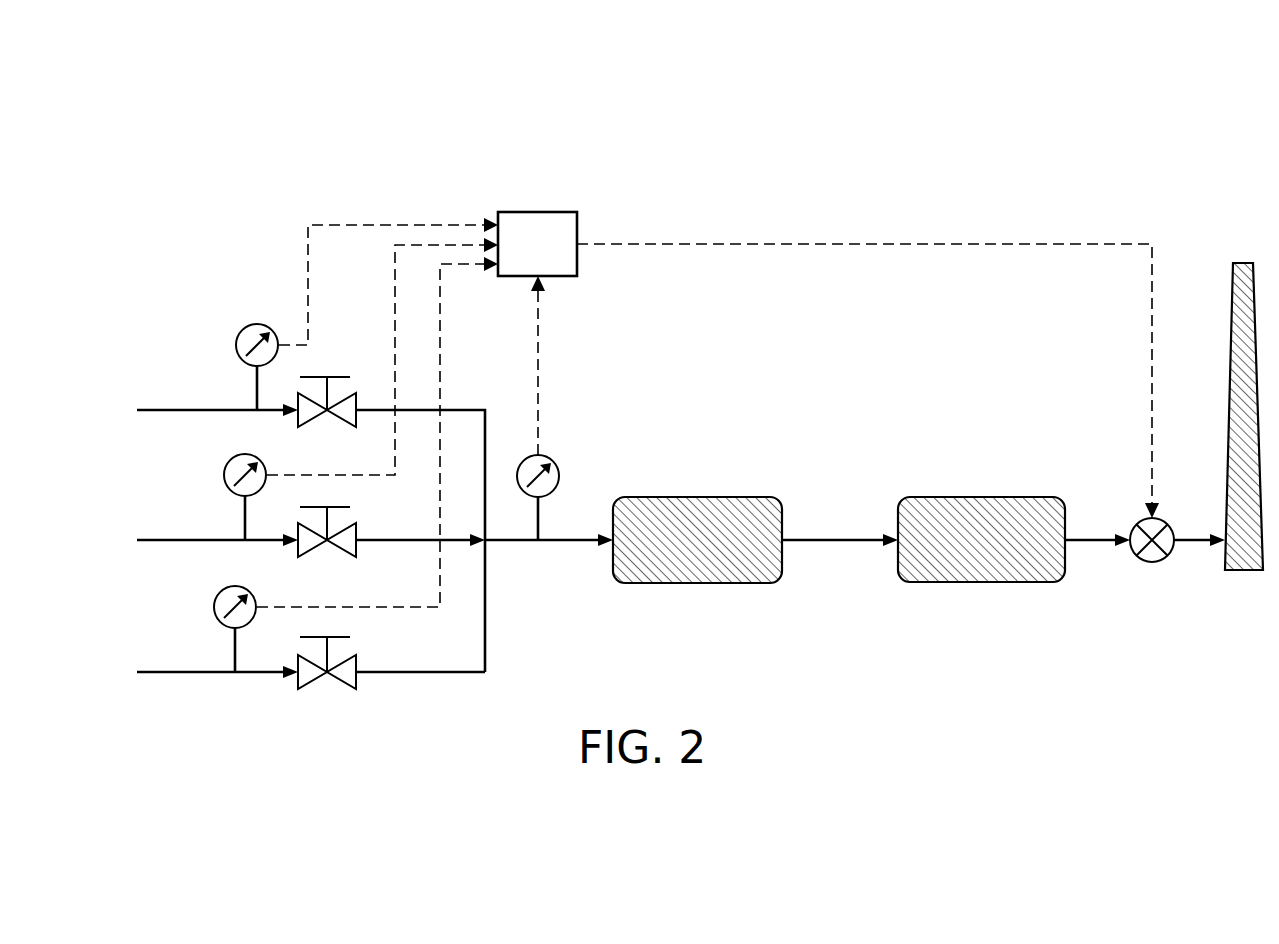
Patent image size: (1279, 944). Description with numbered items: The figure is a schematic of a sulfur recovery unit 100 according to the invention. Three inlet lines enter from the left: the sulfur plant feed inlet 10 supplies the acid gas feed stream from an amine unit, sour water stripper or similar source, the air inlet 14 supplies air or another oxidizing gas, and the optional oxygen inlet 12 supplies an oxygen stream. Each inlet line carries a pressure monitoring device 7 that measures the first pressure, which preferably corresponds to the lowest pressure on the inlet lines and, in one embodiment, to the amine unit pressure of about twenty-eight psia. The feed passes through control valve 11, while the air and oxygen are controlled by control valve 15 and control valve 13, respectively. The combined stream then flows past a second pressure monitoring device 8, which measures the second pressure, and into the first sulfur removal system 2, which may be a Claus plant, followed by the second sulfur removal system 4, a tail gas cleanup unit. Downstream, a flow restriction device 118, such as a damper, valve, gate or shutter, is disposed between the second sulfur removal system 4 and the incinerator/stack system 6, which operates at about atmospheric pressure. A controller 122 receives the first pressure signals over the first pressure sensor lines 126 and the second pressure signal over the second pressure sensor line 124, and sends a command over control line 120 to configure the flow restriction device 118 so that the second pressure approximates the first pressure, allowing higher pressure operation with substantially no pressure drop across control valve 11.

The sulfur recovery unit 100 is at (952, 152).
The sulfur plant feed inlet 10 is at (168, 410).
The air inlet 14 is at (168, 540).
The oxygen inlet 12 is at (168, 672).
The pressure monitoring device 7 is at (249, 325).
The control valve 11 is at (332, 377).
The control valve 15 is at (342, 507).
The control valve 13 is at (342, 637).
The pressure monitoring device 8 is at (560, 476).
The first sulfur removal system 2 is at (690, 497).
The second sulfur removal system 4 is at (976, 497).
The flow restriction device 118 is at (1154, 563).
The incinerator/stack system 6 is at (1230, 385).
The controller 122 is at (530, 212).
The first pressure sensor lines 126 is at (400, 225).
The second pressure sensor line 124 is at (538, 363).
The control line 120 is at (790, 244).